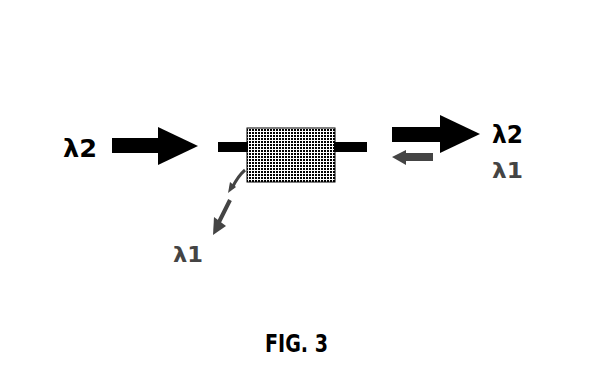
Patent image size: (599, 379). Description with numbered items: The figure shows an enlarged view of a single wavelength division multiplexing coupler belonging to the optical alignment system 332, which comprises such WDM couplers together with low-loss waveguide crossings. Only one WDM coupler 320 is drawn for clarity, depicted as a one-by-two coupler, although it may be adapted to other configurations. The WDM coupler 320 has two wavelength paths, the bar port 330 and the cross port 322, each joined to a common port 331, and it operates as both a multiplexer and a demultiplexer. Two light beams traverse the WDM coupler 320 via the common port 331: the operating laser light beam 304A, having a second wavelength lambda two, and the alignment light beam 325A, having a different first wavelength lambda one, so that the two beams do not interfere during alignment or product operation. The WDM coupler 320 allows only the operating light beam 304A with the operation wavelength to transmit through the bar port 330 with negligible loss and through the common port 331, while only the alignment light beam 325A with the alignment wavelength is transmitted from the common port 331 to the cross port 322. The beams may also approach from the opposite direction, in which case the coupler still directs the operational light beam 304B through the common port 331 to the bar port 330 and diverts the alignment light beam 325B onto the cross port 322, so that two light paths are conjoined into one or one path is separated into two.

The operating laser light beam 304A is at (133, 139).
The operational light beam 304B is at (445, 127).
The WDM coupler 320 is at (302, 140).
The cross port 322 is at (235, 183).
The alignment light beam 325A is at (420, 160).
The alignment light beam 325B is at (228, 213).
The bar port 330 is at (232, 142).
The common port 331 is at (353, 142).
The optical alignment system 332 is at (193, 75).